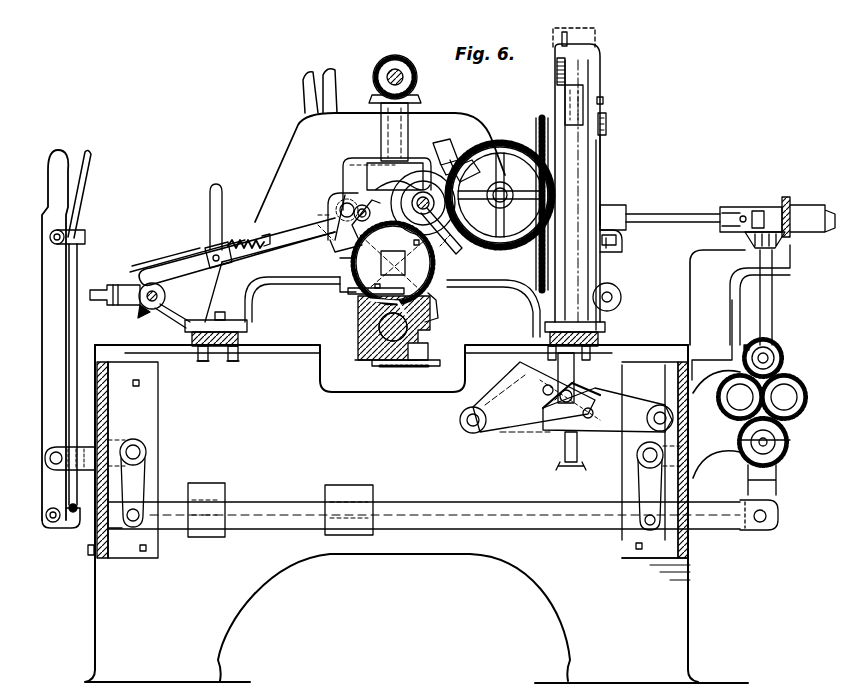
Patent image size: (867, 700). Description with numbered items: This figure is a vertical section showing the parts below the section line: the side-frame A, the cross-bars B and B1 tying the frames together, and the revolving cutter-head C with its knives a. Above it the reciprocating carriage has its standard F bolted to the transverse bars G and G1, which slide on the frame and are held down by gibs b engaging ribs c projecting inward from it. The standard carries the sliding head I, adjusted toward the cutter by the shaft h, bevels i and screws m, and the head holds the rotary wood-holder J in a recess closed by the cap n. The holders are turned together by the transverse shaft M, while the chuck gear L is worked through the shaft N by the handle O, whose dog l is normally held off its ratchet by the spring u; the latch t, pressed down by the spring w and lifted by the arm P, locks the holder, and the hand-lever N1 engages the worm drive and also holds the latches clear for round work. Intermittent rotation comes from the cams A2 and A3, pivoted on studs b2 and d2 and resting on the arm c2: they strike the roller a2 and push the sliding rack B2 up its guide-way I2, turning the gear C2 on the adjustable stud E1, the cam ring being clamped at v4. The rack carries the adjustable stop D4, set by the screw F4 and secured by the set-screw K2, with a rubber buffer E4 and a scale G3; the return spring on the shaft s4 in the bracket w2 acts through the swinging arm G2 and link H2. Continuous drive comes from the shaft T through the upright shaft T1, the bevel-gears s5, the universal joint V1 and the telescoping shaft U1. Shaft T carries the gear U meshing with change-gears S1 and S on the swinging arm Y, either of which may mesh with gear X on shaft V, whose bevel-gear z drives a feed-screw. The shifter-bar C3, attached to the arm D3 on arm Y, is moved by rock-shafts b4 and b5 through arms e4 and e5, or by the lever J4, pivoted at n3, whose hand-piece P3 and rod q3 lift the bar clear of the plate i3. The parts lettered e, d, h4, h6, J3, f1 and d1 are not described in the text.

The side-frame A is at (416, 491).
The cross-bar B is at (116, 460).
The cross-bar B1 is at (668, 546).
The shifter-bar C3 is at (488, 505).
The shaft bearing J3 is at (335, 490).
The rock-shaft b5 is at (142, 452).
The arm e5 is at (146, 478).
The stop h6 is at (110, 528).
The plate i3 is at (92, 560).
The lever J4 is at (50, 325).
The hand-piece P3 is at (84, 205).
The rod q3 is at (87, 378).
The pivot h4 is at (78, 528).
The pivot n3 is at (48, 458).
The plunger e is at (100, 292).
The roller d is at (155, 306).
The handle O is at (250, 252).
The spring u is at (237, 226).
The transverse bar G is at (247, 328).
The gib b is at (220, 350).
The rib c is at (285, 345).
The hand-lever N1 is at (380, 139).
The bevel i is at (405, 68).
The shaft h is at (404, 78).
The screw m is at (395, 162).
The arm P is at (370, 185).
The standard F is at (331, 198).
The spring w is at (345, 202).
The dog l is at (330, 235).
The head I is at (366, 207).
The latch t is at (372, 220).
The stud E1 is at (443, 203).
The transverse shaft M is at (445, 233).
The arm c2 is at (566, 448).
The clamp v4 is at (452, 170).
The gear C2 is at (500, 190).
The sliding rack B2 is at (548, 250).
The transverse shaft N is at (355, 250).
The stud b2 is at (458, 432).
The cap n is at (352, 285).
The gear L is at (352, 292).
The wood-holder J is at (435, 290).
The cutter-head C is at (428, 332).
The knife a is at (397, 372).
The adjustable stop D4 is at (588, 95).
The screw F4 is at (560, 70).
The scale G3 is at (558, 92).
The set-screw K2 is at (604, 100).
The buffer E4 is at (604, 150).
The link H2 is at (600, 180).
The guide-way I2 is at (582, 210).
The telescoping shaft U1 is at (690, 214).
The universal joint V1 is at (752, 208).
The bevel-gears s5 is at (775, 200).
The bracket w2 is at (620, 240).
The shaft s4 is at (618, 244).
The swinging arm G2 is at (618, 252).
The wheel f1 is at (622, 294).
The pin d1 is at (612, 300).
The transverse bar G1 is at (546, 322).
The upright shaft T1 is at (772, 300).
The bevel-gear z is at (742, 339).
The shaft V is at (770, 350).
The gear X is at (782, 360).
The change-gear S is at (727, 424).
The change-gear S1 is at (798, 400).
The swinging arm Y is at (790, 420).
The shaft T is at (776, 442).
The gear U is at (774, 456).
The arm D3 is at (776, 478).
The cam A2 is at (534, 397).
The roller a2 is at (570, 392).
The cam A3 is at (607, 407).
The stud d2 is at (661, 406).
The rock-shaft b4 is at (638, 457).
The arm e4 is at (640, 480).